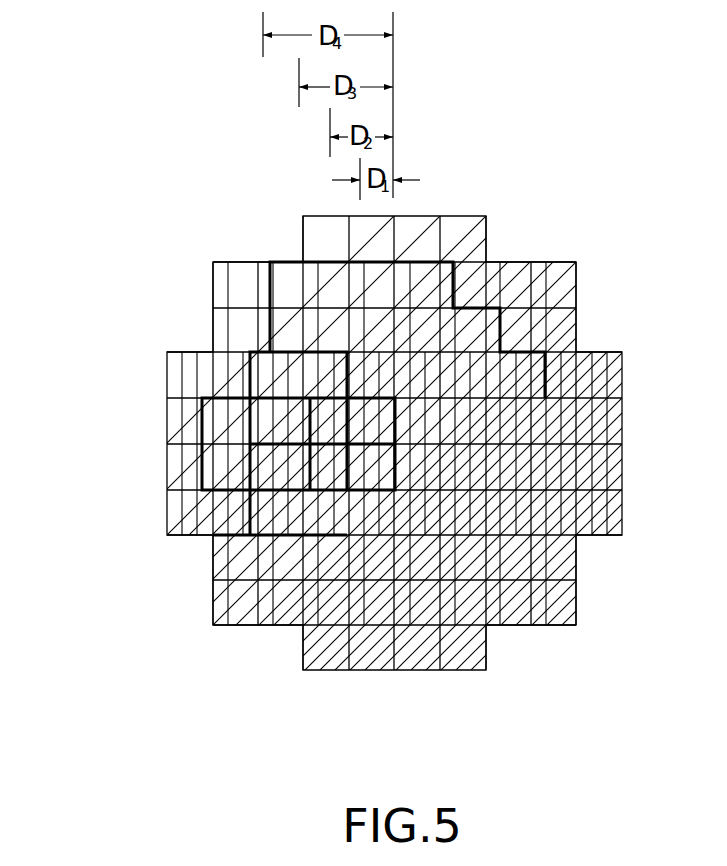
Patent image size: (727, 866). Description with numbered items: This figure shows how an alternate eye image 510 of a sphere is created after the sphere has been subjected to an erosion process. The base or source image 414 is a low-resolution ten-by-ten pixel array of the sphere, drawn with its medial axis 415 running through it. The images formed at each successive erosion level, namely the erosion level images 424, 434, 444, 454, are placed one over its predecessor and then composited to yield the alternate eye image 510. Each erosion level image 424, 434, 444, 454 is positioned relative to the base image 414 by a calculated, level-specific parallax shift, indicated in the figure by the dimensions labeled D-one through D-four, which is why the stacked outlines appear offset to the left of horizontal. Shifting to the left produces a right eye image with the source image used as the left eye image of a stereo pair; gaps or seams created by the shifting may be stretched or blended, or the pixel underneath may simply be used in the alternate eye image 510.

The alternate eye image 510 is at (98, 126).
The medial axis 415 is at (397, 447).
The sphere image 414 is at (473, 667).
The erosion level image 424 is at (395, 615).
The erosion level image 434 is at (330, 560).
The erosion level image 444 is at (270, 535).
The erosion level image 454 is at (202, 490).